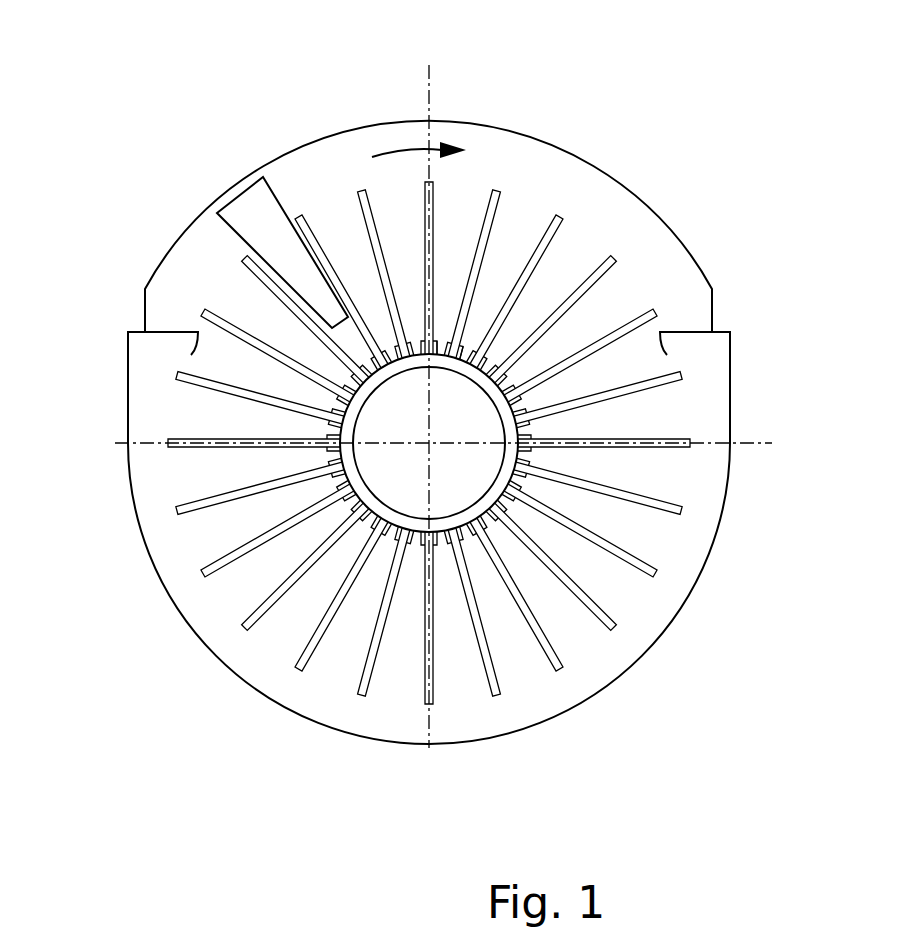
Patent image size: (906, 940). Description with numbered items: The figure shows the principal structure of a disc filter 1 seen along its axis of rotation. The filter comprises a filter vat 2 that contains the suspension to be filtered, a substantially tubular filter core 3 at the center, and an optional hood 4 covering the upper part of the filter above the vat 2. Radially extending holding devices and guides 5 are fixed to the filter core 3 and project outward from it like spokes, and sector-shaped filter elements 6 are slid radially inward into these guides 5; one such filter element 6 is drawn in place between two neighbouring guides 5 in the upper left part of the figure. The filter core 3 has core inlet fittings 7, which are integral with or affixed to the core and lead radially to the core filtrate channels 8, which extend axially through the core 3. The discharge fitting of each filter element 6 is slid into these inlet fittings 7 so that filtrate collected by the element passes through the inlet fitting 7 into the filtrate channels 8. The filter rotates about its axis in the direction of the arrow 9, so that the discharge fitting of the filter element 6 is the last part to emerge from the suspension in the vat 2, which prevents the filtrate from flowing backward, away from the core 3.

The disc filter 1 is at (133, 135).
The filter vat 2 is at (335, 727).
The filter core 3 is at (385, 493).
The hood 4 is at (162, 258).
The holding devices and guides 5 is at (175, 440).
The filter element 6 is at (262, 220).
The core inlet fitting 7 is at (441, 330).
The core filtrate channel 8 is at (463, 343).
The arrow 9 is at (424, 140).